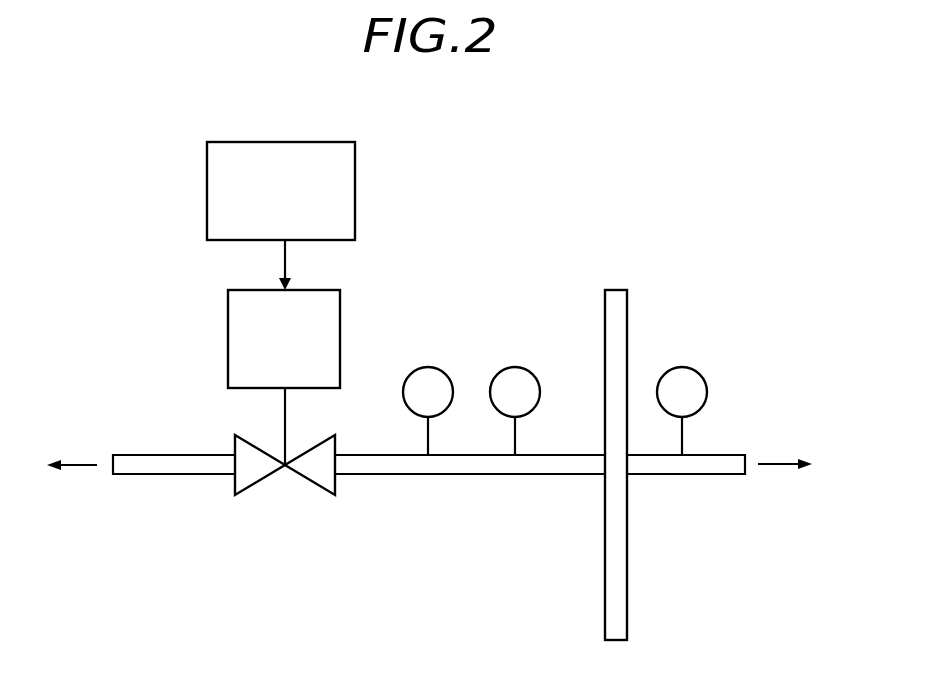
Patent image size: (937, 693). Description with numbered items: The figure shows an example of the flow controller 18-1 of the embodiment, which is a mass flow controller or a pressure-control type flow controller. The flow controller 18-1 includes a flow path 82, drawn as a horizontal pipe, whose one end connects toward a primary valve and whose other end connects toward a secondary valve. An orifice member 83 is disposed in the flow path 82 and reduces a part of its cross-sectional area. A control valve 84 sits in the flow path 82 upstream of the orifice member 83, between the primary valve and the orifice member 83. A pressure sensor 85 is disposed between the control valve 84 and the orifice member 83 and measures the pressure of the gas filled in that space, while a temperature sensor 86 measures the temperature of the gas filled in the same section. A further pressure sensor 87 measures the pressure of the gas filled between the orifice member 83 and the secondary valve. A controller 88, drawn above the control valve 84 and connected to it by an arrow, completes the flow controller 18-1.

The flow controller 18-1 is at (677, 150).
The flow path 82 is at (495, 476).
The orifice member 83 is at (627, 310).
The control valve 84 is at (307, 480).
The pressure sensor 85 is at (430, 366).
The temperature sensor 86 is at (517, 366).
The pressure sensor 87 is at (707, 388).
The controller 88 is at (355, 190).